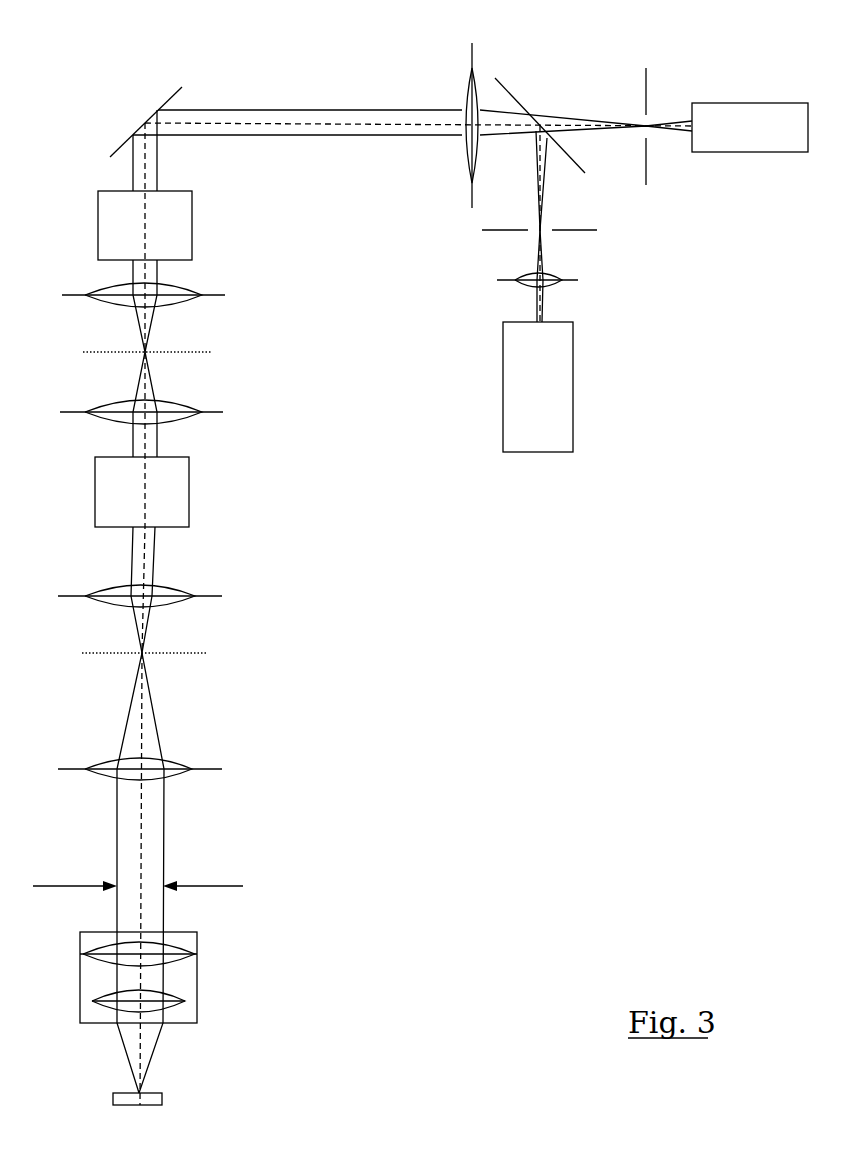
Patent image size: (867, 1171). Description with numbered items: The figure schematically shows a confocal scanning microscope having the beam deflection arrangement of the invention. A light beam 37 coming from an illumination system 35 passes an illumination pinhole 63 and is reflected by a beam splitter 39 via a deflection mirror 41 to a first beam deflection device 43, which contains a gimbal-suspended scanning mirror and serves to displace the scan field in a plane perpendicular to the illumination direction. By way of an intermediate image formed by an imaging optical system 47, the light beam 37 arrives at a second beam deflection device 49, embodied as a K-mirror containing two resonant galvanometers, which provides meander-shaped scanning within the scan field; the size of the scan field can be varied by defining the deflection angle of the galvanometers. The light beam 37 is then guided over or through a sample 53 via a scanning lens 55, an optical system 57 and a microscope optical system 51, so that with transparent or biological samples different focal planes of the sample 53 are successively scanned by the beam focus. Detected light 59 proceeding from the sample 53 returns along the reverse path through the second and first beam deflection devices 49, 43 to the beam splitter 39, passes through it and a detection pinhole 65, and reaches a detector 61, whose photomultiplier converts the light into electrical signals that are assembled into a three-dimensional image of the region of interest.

The illumination system 35 is at (560, 405).
The light beam 37 is at (533, 312).
The beam splitter 39 is at (507, 90).
The deflection mirror 41 is at (163, 98).
The first beam deflection device 43 is at (112, 227).
The imaging optical system 47 is at (222, 385).
The second beam deflection device 49 is at (107, 482).
The microscope optical system 51 is at (185, 978).
The sample 53 is at (143, 1098).
The scanning lens 55 is at (163, 593).
The optical system 57 is at (172, 770).
The detected light 59 is at (150, 828).
The detector 61 is at (750, 117).
The illumination pinhole 63 is at (573, 231).
The detection pinhole 65 is at (645, 162).